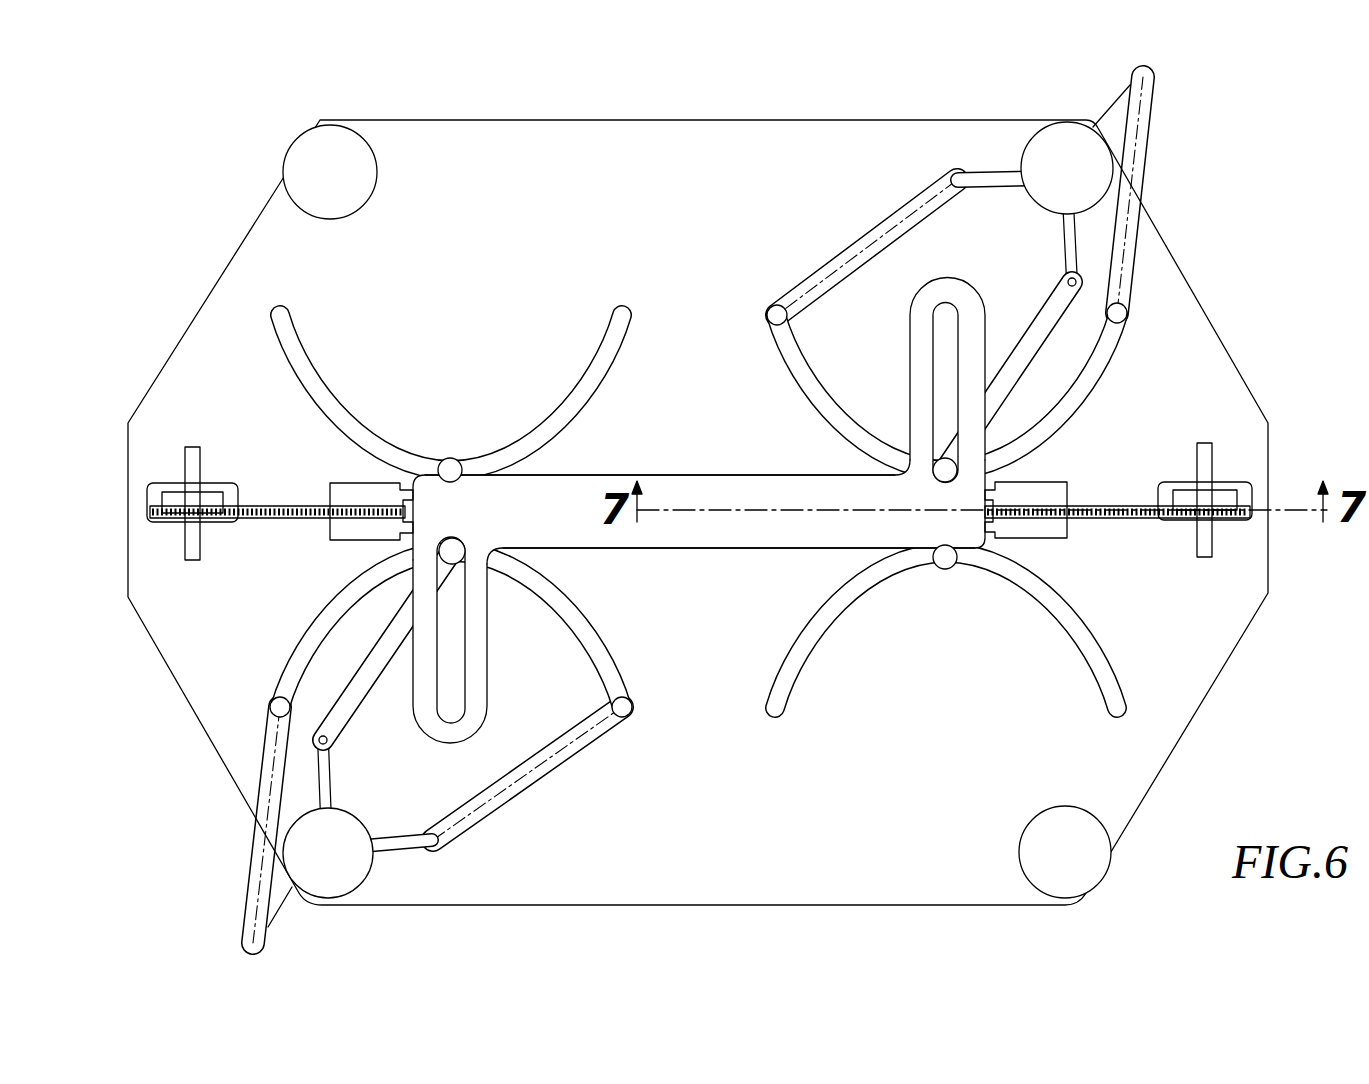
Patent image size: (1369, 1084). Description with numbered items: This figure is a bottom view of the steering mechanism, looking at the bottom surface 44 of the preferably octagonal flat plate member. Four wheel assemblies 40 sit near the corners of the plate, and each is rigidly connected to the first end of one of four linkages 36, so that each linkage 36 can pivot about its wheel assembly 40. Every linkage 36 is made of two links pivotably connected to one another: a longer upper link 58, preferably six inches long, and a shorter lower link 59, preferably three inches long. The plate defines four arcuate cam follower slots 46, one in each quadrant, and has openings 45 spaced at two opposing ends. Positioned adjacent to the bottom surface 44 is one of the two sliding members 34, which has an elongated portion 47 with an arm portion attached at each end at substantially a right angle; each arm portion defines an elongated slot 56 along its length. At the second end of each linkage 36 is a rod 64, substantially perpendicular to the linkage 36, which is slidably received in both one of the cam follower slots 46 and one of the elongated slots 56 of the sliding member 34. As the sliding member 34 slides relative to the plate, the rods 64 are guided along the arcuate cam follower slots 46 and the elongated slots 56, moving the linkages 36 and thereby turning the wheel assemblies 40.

The sliding member 34 is at (583, 478).
The linkage 36 is at (697, 510).
The wheel assembly 40 is at (362, 164).
The bottom surface 44 is at (762, 905).
The opening 45 is at (156, 490).
The cam follower slot 46 is at (285, 331).
The elongated portion 47 is at (672, 480).
The elongated slot 56 is at (942, 331).
The upper link 58 is at (1036, 330).
The lower link 59 is at (1063, 256).
The rod 64 is at (451, 548).